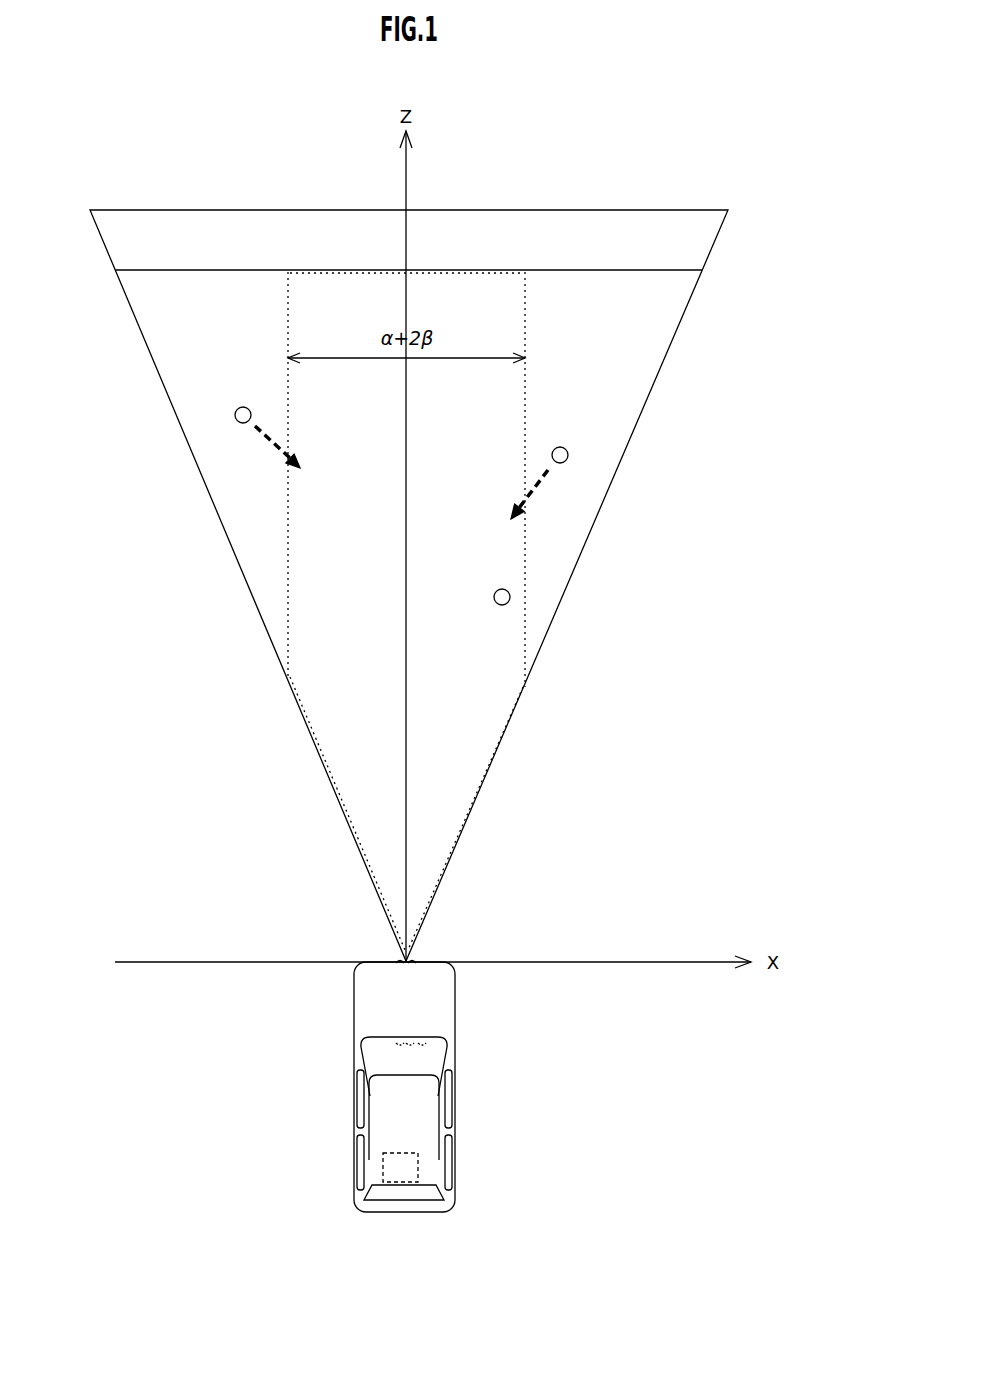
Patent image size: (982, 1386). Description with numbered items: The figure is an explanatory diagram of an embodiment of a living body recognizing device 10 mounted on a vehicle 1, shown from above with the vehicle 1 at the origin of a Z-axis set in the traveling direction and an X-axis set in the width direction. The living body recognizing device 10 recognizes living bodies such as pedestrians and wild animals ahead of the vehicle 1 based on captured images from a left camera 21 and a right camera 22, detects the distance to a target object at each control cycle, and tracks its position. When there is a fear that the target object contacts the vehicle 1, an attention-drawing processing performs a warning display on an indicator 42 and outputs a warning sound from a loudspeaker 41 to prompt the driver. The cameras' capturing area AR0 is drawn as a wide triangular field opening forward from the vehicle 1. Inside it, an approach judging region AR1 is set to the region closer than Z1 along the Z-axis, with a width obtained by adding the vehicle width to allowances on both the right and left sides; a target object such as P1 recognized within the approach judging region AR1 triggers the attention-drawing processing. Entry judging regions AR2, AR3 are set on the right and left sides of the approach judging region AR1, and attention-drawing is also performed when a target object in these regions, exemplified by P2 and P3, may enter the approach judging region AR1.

The vehicle 1 is at (420, 1118).
The living body recognizing device 10 is at (380, 1155).
The left camera 21 is at (400, 960).
The right camera 22 is at (412, 960).
The loudspeaker 41 is at (441, 1038).
The indicator 42 is at (410, 1030).
The Z-axis distance limit Z1 is at (407, 270).
The capturing area AR0 is at (680, 238).
The approach judging region AR1 is at (335, 750).
The entry judging region AR2 is at (585, 500).
The entry judging region AR3 is at (262, 495).
The target object in approach judging region P1 is at (498, 606).
The target object in entry judging region P2 is at (563, 447).
The target object in entry judging region P3 is at (243, 407).